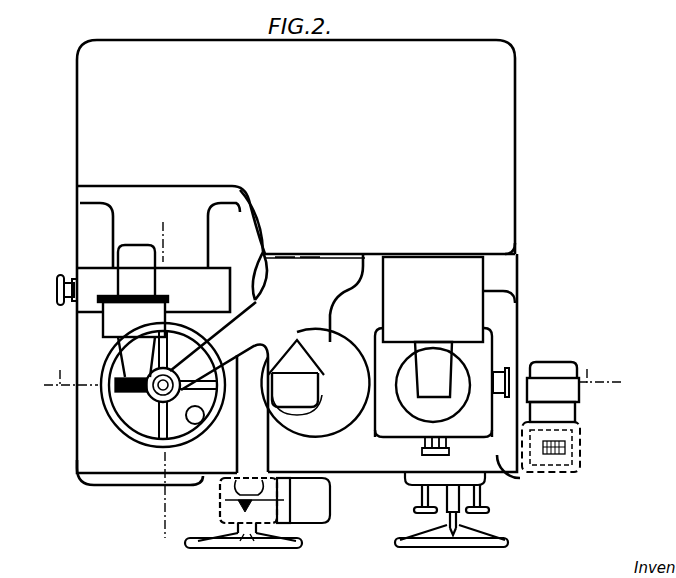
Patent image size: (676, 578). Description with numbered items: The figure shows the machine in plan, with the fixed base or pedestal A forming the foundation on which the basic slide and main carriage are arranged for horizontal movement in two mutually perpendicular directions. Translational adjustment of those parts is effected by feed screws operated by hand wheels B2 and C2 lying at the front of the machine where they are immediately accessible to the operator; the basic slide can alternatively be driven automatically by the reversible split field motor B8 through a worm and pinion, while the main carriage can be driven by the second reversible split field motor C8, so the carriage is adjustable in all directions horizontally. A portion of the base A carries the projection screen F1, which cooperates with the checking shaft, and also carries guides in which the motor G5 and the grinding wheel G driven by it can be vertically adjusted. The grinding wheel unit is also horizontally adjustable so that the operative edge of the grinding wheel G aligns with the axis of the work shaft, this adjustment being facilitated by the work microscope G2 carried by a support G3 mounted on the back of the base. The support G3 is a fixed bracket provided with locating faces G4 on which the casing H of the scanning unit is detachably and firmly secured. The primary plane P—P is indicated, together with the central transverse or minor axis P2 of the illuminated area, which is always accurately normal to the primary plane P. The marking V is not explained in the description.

The fixed base or pedestal A is at (90, 323).
The motor G5 is at (143, 288).
The grinding wheel G is at (120, 388).
The work microscope G2 is at (160, 393).
The support (fixed bracket) G3 is at (263, 252).
The locating faces G4 is at (296, 346).
The casing H is at (305, 402).
The projection screen F1 is at (461, 268).
The second reversible split field motor C8 is at (558, 385).
The vibrator unit V is at (488, 455).
The central transverse (minor) axis P2 is at (333, 367).
The primary plane P is at (164, 236).
The reversible split field motor B8 is at (297, 502).
The hand wheel B2 is at (228, 549).
The hand wheel C2 is at (505, 538).